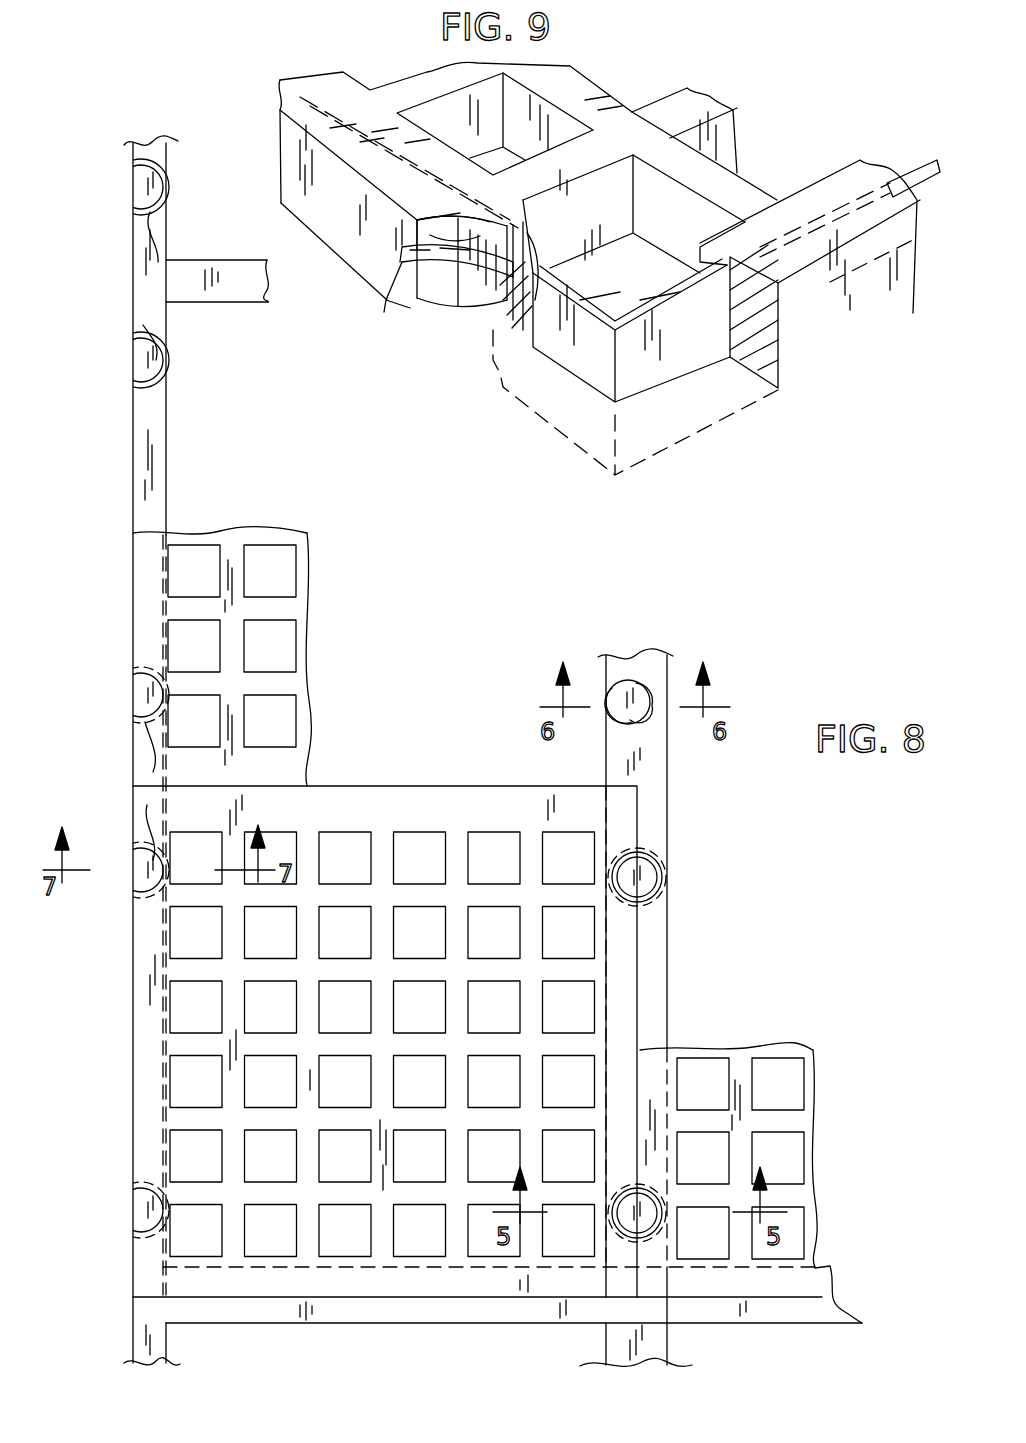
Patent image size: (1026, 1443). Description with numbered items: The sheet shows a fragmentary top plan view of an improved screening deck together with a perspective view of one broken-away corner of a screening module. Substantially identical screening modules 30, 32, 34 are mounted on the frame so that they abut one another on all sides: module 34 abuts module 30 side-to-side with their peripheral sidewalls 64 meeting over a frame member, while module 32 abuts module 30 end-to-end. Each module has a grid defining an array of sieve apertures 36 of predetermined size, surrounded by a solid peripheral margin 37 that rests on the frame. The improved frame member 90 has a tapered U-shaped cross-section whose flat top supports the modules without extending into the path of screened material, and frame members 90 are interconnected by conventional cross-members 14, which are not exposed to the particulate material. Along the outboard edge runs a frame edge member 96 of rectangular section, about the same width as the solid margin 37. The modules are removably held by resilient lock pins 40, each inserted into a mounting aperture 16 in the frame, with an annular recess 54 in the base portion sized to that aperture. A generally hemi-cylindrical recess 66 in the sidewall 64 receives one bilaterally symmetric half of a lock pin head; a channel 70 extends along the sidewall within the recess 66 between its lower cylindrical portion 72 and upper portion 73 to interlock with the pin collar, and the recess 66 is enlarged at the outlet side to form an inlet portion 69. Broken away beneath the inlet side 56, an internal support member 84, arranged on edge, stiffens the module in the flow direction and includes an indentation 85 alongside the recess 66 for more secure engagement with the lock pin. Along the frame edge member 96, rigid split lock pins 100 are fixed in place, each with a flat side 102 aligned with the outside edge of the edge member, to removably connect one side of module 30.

In FIG. 8, the cross-member 14 is at (228, 300).
In FIG. 8, the mounting aperture 16 is at (640, 715).
In FIG. 8, the screening module 30 is at (405, 783).
In FIG. 9, the screening module 30 is at (625, 80).
In FIG. 8, the screening module 32 is at (238, 530).
In FIG. 8, the screening module 34 is at (762, 1050).
In FIG. 8, the sieve aperture 36 is at (570, 992).
In FIG. 9, the sieve aperture 36 is at (455, 110).
In FIG. 8, the solid peripheral margin 37 is at (190, 1278).
In FIG. 9, the solid peripheral margin 37 is at (840, 190).
In FIG. 8, the lock pin 40 is at (648, 868).
In FIG. 8, the annular recess 54 is at (666, 880).
In FIG. 9, the inlet side 56 is at (692, 102).
In FIG. 9, the peripheral sidewall 64 is at (356, 248).
In FIG. 9, the hemi-cylindrical recess 66 is at (428, 322).
In FIG. 9, the inlet portion 69 is at (405, 300).
In FIG. 9, the channel 70 is at (405, 270).
In FIG. 9, the lower portion 72 is at (492, 305).
In FIG. 9, the upper portion 73 is at (412, 228).
In FIG. 9, the internal support member 84 is at (925, 162).
In FIG. 9, the indentation 85 is at (560, 232).
In FIG. 8, the frame member 90 is at (665, 972).
In FIG. 8, the frame edge member 96 is at (132, 450).
In FIG. 8, the split lock pin 100 is at (133, 300).
In FIG. 8, the flat side 102 is at (133, 186).